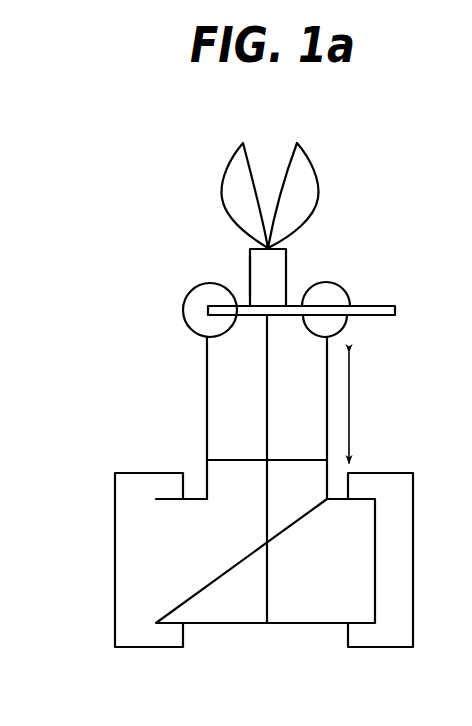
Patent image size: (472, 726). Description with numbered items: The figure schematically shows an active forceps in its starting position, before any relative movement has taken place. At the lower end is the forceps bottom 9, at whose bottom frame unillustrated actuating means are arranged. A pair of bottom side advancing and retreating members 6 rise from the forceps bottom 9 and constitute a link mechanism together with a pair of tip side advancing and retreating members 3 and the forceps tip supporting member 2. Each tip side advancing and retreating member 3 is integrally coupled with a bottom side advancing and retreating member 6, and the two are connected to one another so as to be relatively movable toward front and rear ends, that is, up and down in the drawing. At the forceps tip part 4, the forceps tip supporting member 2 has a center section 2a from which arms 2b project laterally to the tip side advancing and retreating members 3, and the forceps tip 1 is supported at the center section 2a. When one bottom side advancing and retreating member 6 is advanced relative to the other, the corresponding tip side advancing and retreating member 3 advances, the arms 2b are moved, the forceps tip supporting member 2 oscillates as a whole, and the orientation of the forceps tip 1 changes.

The forceps tip 1 is at (310, 160).
The forceps tip supporting member 2 is at (292, 273).
The center section 2a is at (250, 272).
The arms 2b is at (193, 292).
The tip side advancing and retreating members 3 is at (207, 405).
The forceps tip part 4 is at (205, 190).
The bottom side advancing and retreating members 6 is at (217, 623).
The forceps bottom 9 is at (101, 539).